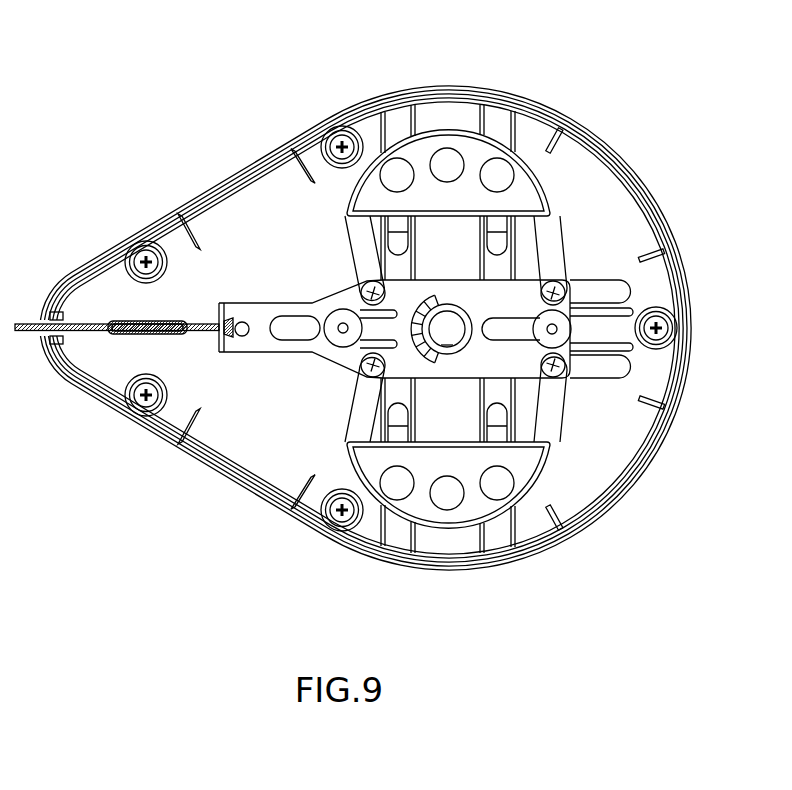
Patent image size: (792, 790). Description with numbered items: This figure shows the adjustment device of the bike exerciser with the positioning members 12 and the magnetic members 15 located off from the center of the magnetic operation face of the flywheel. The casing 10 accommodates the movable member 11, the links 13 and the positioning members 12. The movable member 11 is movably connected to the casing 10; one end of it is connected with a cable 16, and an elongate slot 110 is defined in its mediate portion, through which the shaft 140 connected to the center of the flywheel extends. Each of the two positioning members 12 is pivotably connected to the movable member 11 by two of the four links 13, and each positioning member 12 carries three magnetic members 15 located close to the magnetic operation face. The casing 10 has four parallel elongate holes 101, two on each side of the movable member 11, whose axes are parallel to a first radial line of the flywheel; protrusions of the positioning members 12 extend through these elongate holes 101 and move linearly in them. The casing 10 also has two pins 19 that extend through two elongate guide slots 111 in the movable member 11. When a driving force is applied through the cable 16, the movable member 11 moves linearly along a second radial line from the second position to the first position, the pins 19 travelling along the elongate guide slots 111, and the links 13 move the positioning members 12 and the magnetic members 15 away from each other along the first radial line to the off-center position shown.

The casing 10 is at (657, 203).
The movable member 11 is at (248, 340).
The positioning member 12 is at (370, 132).
The link 13 is at (357, 228).
The magnetic member 15 is at (447, 165).
The cable 16 is at (78, 328).
The pin 19 is at (340, 328).
The elongate hole 101 is at (397, 220).
The elongate slot 110 is at (374, 333).
The elongate guide slot 111 is at (285, 320).
The shaft 140 is at (447, 328).